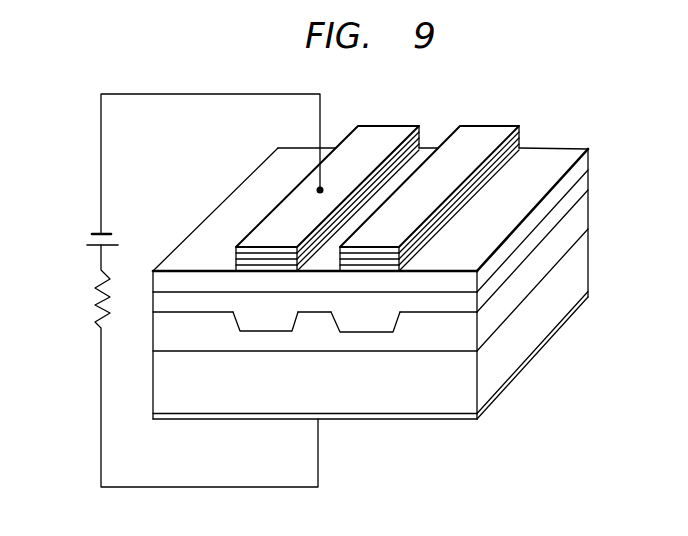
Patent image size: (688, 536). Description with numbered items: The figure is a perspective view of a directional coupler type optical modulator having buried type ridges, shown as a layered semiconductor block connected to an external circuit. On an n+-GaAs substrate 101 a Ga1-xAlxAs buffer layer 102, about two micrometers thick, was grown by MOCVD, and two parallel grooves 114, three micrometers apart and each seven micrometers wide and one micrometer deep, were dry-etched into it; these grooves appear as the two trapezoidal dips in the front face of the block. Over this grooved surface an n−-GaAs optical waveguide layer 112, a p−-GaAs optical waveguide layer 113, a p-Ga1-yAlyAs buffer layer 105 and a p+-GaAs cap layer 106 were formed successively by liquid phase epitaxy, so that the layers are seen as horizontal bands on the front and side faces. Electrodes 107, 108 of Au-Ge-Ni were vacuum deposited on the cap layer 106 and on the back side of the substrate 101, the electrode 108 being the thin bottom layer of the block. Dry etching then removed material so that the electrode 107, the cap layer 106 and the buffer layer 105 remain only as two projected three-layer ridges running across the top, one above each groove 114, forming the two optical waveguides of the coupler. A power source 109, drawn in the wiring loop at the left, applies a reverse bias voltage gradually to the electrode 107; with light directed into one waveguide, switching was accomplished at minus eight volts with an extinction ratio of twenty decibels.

The n+-GaAs substrate 101 is at (477, 377).
The Ga1-xAlxAs buffer layer 102 is at (477, 328).
The p-Ga1-yAlyAs buffer layer 105 is at (519, 147).
The p+-GaAs cap layer 106 is at (519, 131).
The electrode 107 is at (483, 124).
The electrode 108 is at (430, 420).
The power source 109 is at (93, 248).
The n−-GaAs optical waveguide layer 112 is at (477, 302).
The p−-GaAs optical waveguide layer 113 is at (477, 282).
The grooves 114 is at (364, 333).